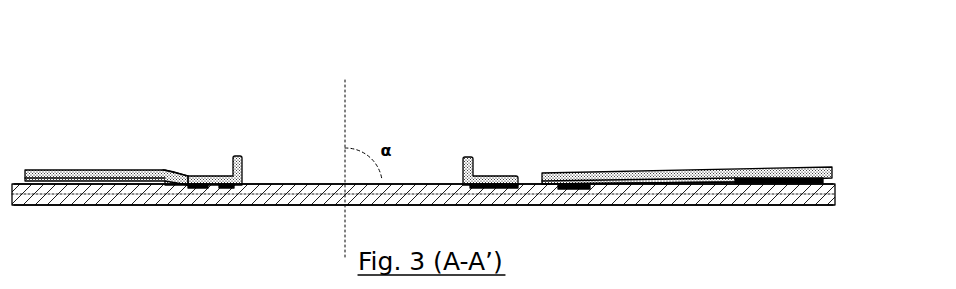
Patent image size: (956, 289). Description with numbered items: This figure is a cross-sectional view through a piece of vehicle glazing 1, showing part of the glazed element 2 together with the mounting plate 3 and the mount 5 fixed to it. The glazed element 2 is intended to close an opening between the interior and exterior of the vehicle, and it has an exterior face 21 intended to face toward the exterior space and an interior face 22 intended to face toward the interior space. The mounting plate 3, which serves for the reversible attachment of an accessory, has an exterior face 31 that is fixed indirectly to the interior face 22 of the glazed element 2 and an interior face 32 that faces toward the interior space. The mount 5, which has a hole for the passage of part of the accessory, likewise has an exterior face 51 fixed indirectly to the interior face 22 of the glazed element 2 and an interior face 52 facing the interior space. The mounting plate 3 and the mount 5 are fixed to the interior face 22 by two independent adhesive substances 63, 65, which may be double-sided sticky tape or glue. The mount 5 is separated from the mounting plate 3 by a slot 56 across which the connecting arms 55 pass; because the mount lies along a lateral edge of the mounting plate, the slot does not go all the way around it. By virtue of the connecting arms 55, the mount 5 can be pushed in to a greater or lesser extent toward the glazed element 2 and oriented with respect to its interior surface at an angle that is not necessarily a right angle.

The vehicle glazing 1 is at (153, 131).
The glazed element 2 is at (267, 205).
The mounting plate 3 is at (647, 143).
The mount 5 is at (235, 169).
The exterior face of the glazed element 21 is at (312, 206).
The interior face of the glazed element 22 is at (308, 185).
The exterior face of the mounting plate 31 is at (700, 183).
The interior face of the mounting plate 32 is at (651, 172).
The exterior face of the mount 51 is at (217, 189).
The interior face of the mount 52 is at (206, 175).
The connecting arms 55 is at (178, 174).
The slot 56 is at (168, 178).
The adhesive substance 63 is at (783, 173).
The adhesive substance 65 is at (499, 184).